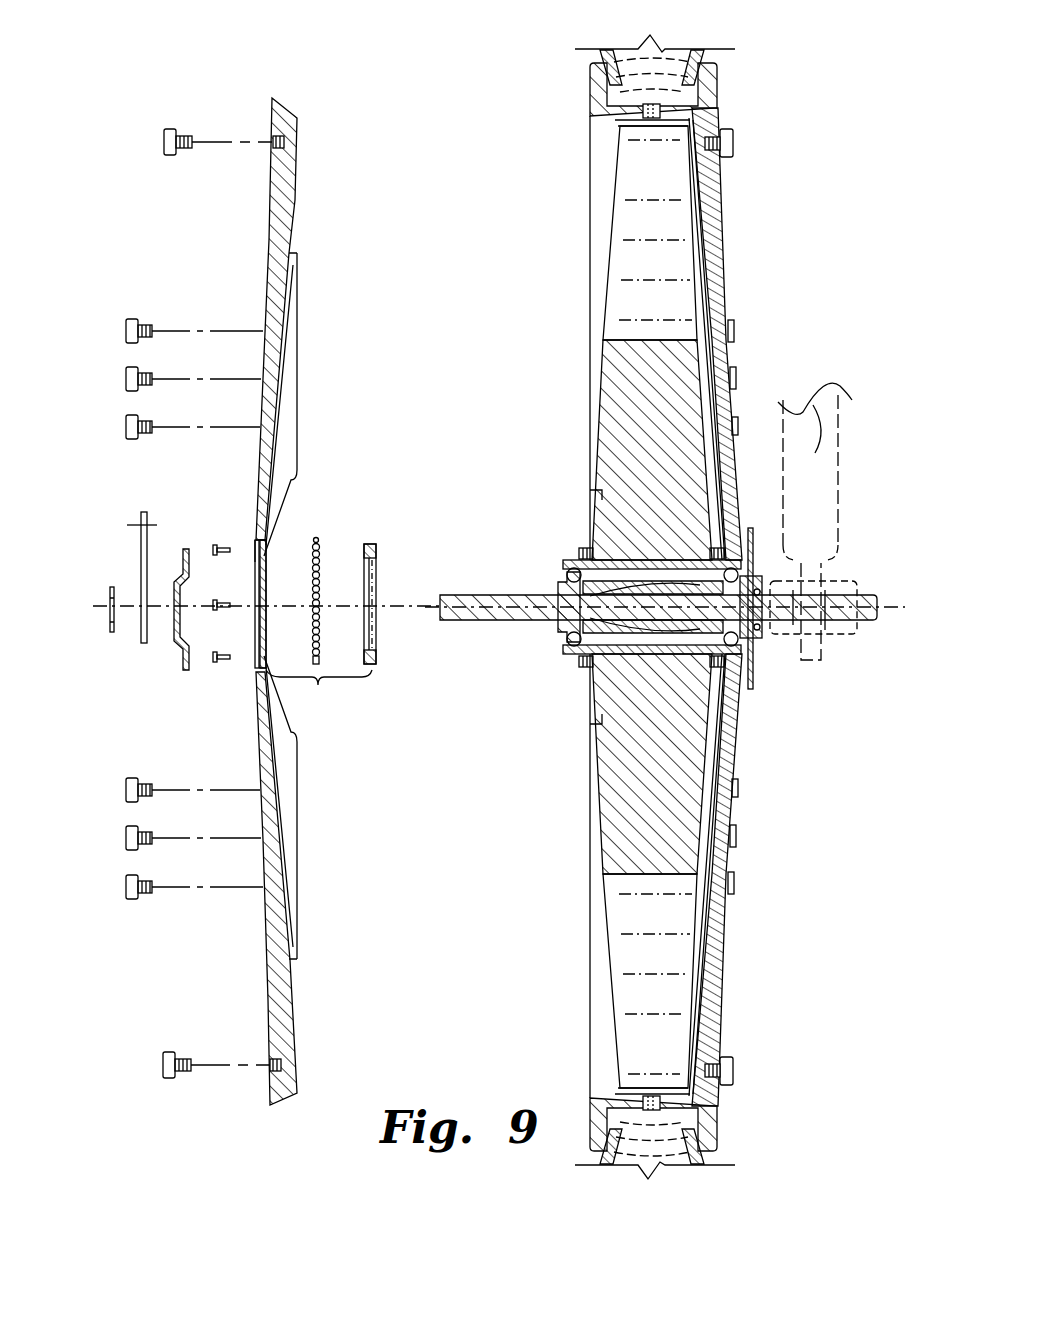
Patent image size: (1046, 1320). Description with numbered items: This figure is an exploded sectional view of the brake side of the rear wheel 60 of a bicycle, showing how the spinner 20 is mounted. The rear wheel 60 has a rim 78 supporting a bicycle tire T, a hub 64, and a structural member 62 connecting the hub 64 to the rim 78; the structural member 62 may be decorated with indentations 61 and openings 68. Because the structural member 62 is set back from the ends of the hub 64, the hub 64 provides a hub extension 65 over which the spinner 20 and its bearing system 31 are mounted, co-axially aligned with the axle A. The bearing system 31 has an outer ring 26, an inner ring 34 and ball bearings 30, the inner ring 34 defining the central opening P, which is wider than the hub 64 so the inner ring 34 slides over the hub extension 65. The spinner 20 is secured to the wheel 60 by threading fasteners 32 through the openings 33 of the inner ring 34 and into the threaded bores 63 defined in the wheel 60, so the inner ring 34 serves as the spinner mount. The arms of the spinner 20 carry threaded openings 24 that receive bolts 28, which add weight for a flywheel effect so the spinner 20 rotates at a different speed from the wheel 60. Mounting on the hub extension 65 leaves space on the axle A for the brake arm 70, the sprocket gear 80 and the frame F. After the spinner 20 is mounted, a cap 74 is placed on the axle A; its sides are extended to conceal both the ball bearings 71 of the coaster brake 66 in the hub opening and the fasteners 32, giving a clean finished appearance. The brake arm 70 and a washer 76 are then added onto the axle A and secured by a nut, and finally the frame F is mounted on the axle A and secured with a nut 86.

The spinner 20 is at (537, 584).
The threaded openings 24 is at (293, 150).
The outer ring 26 is at (264, 538).
The bolts 28 is at (162, 140).
The ball bearings 30 is at (318, 540).
The bearing system 31 is at (319, 691).
The fasteners 32 is at (215, 664).
The openings 33 is at (378, 656).
The inner ring 34 is at (405, 583).
The rear wheel 60 is at (682, 601).
The indentations 61 is at (598, 493).
The structural member 62 is at (632, 369).
The threaded bores 63 is at (590, 549).
The hub 64 is at (567, 562).
The hub extension 65 is at (575, 663).
The coaster brake 66 is at (661, 654).
The openings 68 is at (628, 228).
The brake arm 70 is at (143, 645).
The ball bearings 71 is at (565, 646).
The cap 74 is at (183, 664).
The washer 76 is at (113, 640).
The rim 78 is at (597, 86).
The sprocket gear 80 is at (755, 672).
The nut 86 is at (845, 580).
The bicycle tire T is at (600, 70).
The central opening P is at (250, 544).
The frame F is at (799, 390).
The axle A is at (878, 620).